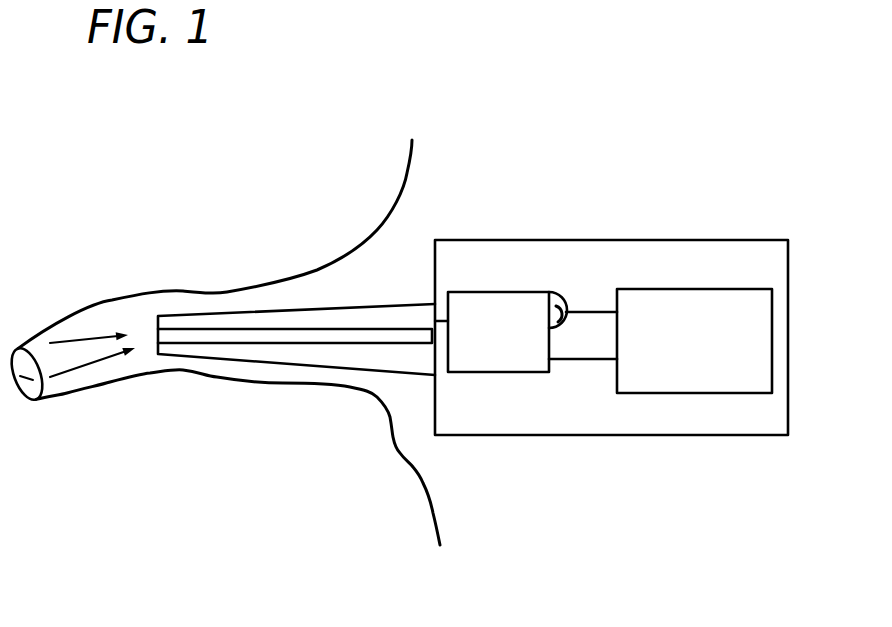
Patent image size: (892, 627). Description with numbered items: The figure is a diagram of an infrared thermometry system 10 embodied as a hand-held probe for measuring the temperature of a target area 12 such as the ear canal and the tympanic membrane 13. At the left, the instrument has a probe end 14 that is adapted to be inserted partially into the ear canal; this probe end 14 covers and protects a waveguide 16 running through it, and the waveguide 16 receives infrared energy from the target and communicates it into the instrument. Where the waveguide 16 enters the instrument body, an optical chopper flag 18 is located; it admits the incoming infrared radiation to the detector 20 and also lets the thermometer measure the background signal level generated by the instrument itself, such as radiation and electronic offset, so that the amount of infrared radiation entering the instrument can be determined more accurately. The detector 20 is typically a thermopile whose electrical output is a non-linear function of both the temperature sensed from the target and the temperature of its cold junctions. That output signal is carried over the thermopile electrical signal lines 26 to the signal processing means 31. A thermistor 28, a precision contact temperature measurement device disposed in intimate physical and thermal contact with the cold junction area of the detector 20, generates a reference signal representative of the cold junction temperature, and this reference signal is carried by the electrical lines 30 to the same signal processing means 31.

The infrared thermometry system 10 is at (702, 218).
The target area 12 is at (48, 306).
The tympanic membrane 13 is at (32, 378).
The probe end 14 is at (292, 308).
The waveguide 16 is at (230, 343).
The optical chopper flag 18 is at (435, 317).
The detector 20 is at (493, 292).
The thermopile electrical signal lines 26 is at (583, 360).
The thermistor 28 is at (563, 307).
The electrical lines 30 is at (602, 310).
The signal processing means 31 is at (713, 395).